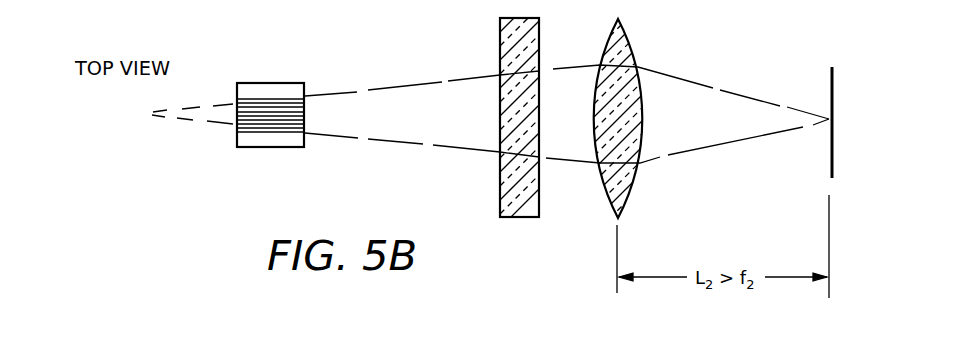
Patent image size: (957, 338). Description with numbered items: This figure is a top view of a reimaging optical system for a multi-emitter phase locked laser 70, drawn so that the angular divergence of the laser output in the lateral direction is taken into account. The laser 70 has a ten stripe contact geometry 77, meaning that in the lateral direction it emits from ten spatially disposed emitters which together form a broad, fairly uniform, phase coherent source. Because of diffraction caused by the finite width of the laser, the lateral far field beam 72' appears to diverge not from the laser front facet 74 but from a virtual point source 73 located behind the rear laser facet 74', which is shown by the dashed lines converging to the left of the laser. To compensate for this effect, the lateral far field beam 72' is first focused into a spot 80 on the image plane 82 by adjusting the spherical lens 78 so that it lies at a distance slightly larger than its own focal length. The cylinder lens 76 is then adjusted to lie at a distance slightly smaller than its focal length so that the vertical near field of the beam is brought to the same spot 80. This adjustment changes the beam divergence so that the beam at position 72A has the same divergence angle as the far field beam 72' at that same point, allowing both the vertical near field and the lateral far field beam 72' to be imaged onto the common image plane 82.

The multi-emitter phase locked laser 70 is at (241, 74).
The ten stripe contact geometry 77 is at (268, 93).
The virtual point source 73 is at (147, 114).
The rear laser facet 74' is at (210, 157).
The laser front facet 74 is at (326, 157).
The lateral far field beam 72' is at (567, 103).
The cylinder lens 76 is at (500, 33).
The beam position 72A is at (568, 68).
The spherical lens 78 is at (634, 34).
The image plane 82 is at (836, 82).
The spot 80 is at (826, 121).